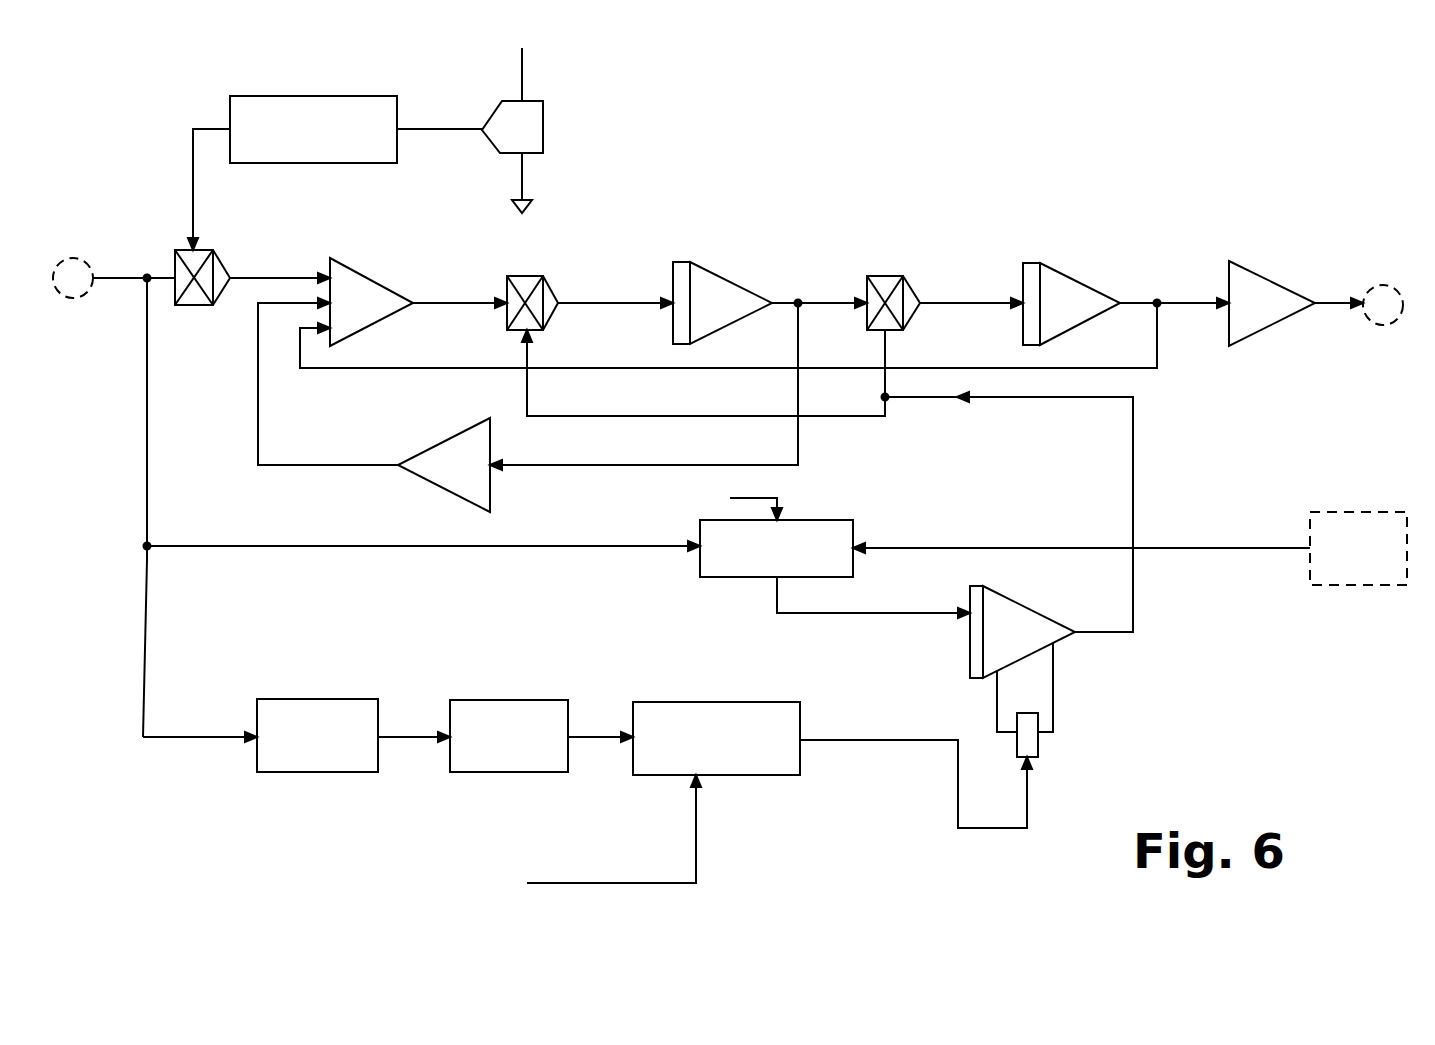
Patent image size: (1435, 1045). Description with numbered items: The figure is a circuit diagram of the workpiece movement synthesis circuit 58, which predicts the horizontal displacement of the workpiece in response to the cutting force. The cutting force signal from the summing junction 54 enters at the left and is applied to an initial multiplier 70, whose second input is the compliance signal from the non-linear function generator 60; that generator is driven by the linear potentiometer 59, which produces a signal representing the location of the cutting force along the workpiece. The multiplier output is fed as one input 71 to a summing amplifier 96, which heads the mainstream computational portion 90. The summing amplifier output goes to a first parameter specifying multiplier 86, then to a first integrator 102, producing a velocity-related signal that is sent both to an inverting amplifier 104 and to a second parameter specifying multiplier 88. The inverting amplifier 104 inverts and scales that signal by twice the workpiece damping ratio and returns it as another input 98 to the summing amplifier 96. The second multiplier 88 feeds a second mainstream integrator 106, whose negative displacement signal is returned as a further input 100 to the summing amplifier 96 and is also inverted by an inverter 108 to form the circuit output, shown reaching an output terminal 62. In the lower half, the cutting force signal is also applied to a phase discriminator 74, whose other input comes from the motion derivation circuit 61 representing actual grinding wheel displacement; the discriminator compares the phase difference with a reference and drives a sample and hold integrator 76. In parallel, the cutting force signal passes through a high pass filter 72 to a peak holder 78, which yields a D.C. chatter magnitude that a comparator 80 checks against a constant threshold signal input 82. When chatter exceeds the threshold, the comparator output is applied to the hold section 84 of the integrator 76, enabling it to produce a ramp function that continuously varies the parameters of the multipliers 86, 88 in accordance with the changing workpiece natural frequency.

The summing junction 54 is at (86, 294).
The non-linear function generator 60 is at (313, 96).
The linear potentiometer 59 is at (545, 145).
The initial multiplier 70 is at (213, 255).
The input 71 is at (290, 278).
The summing amplifier 96 is at (372, 275).
The input 98 is at (258, 352).
The input 100 is at (300, 368).
The first parameter specifying multiplier 86 is at (541, 276).
The first integrator 102 is at (728, 280).
The inverting amplifier 104 is at (428, 487).
The second parameter specifying multiplier 88 is at (903, 277).
The second mainstream integrator 106 is at (1070, 273).
The mainstream computational portion 90 is at (1185, 231).
The inverter 108 is at (1280, 287).
The output terminal 62 is at (1370, 288).
The phase discriminator 74 is at (833, 520).
The motion derivation circuit 61 is at (1350, 512).
The workpiece movement synthesis circuit 58 is at (1287, 602).
The sample and hold integrator 76 is at (1050, 615).
The high pass filter 72 is at (310, 699).
The peak holder 78 is at (497, 700).
The comparator 80 is at (703, 702).
The constant threshold signal input 82 is at (696, 833).
The hold section 84 is at (1040, 745).